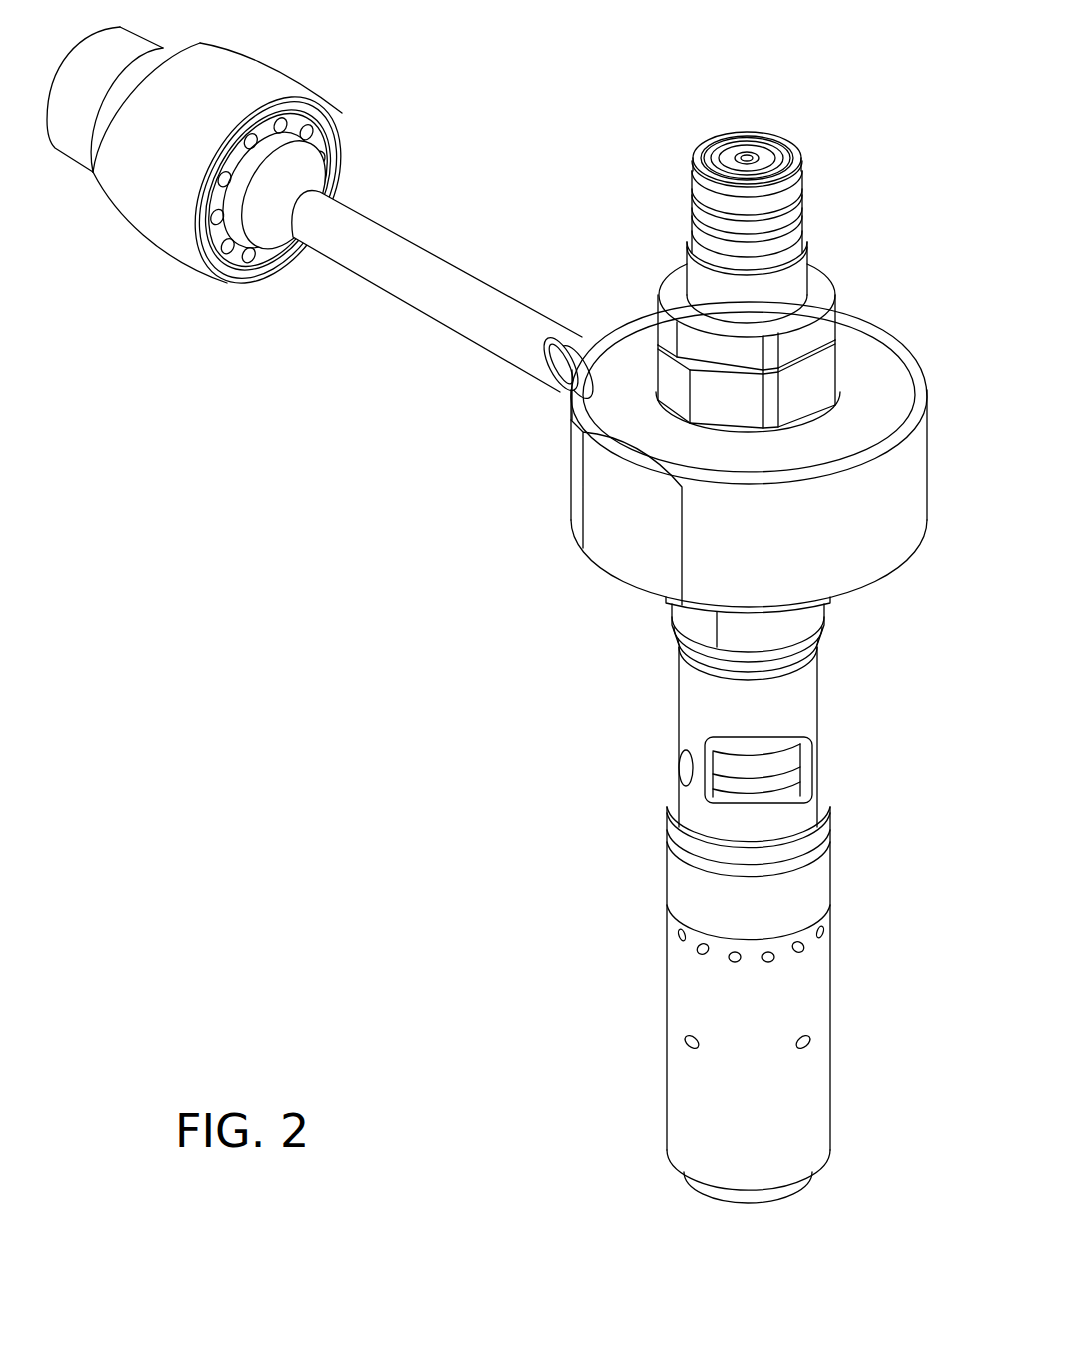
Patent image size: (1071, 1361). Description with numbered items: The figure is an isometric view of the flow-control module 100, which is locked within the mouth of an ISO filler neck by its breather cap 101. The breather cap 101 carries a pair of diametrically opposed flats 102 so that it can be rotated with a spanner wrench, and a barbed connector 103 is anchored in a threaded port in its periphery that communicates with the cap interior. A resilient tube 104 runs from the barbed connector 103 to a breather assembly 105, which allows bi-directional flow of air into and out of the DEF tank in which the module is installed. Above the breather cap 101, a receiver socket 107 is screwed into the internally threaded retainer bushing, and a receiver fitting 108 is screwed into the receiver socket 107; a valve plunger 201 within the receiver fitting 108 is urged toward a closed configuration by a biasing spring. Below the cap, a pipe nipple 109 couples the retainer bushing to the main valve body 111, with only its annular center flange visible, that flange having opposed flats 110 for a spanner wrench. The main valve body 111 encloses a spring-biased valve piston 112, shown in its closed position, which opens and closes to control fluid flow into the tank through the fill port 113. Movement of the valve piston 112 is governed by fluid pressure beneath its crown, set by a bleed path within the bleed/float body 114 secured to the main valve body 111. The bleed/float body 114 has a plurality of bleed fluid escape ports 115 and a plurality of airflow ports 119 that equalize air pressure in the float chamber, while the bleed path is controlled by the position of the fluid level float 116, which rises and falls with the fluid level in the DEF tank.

The flow-control module 100 is at (509, 648).
The breather cap 101 is at (805, 555).
The flats 102 is at (632, 553).
The barbed connector 103 is at (567, 383).
The resilient tube 104 is at (408, 262).
The breather assembly 105 is at (225, 75).
The receiver socket 107 is at (808, 385).
The receiver fitting 108 is at (713, 242).
The pipe nipple 109 is at (780, 630).
The flats 110 is at (695, 625).
The main valve body 111 is at (698, 693).
The valve piston 112 is at (770, 770).
The fill port 113 is at (677, 747).
The bleed/float body 114 is at (708, 1087).
The bleed fluid escape ports 115 is at (725, 960).
The fluid level float 116 is at (737, 1198).
The airflow ports 119 is at (798, 1042).
The valve plunger 201 is at (767, 158).